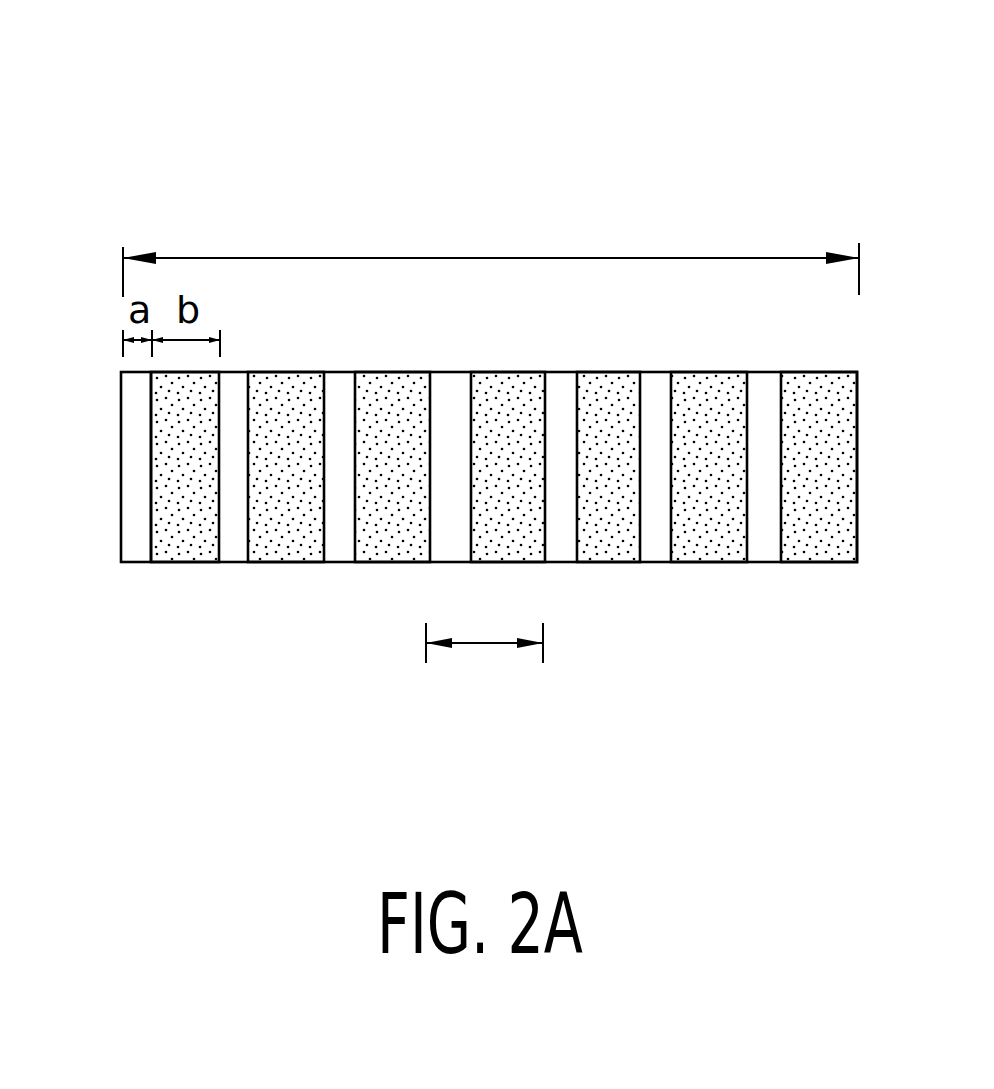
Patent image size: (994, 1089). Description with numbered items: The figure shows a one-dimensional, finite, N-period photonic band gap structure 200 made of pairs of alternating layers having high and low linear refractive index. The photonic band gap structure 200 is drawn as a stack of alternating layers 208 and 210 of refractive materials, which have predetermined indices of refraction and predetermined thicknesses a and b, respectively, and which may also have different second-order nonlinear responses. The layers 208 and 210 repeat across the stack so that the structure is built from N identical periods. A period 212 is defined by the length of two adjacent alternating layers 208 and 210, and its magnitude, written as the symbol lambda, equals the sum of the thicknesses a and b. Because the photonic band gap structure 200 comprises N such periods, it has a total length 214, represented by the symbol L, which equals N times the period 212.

The photonic band gap structure 200 is at (736, 134).
The layer 208 is at (133, 562).
The layer 210 is at (207, 562).
The period 212 is at (480, 643).
The total length 214 is at (344, 258).